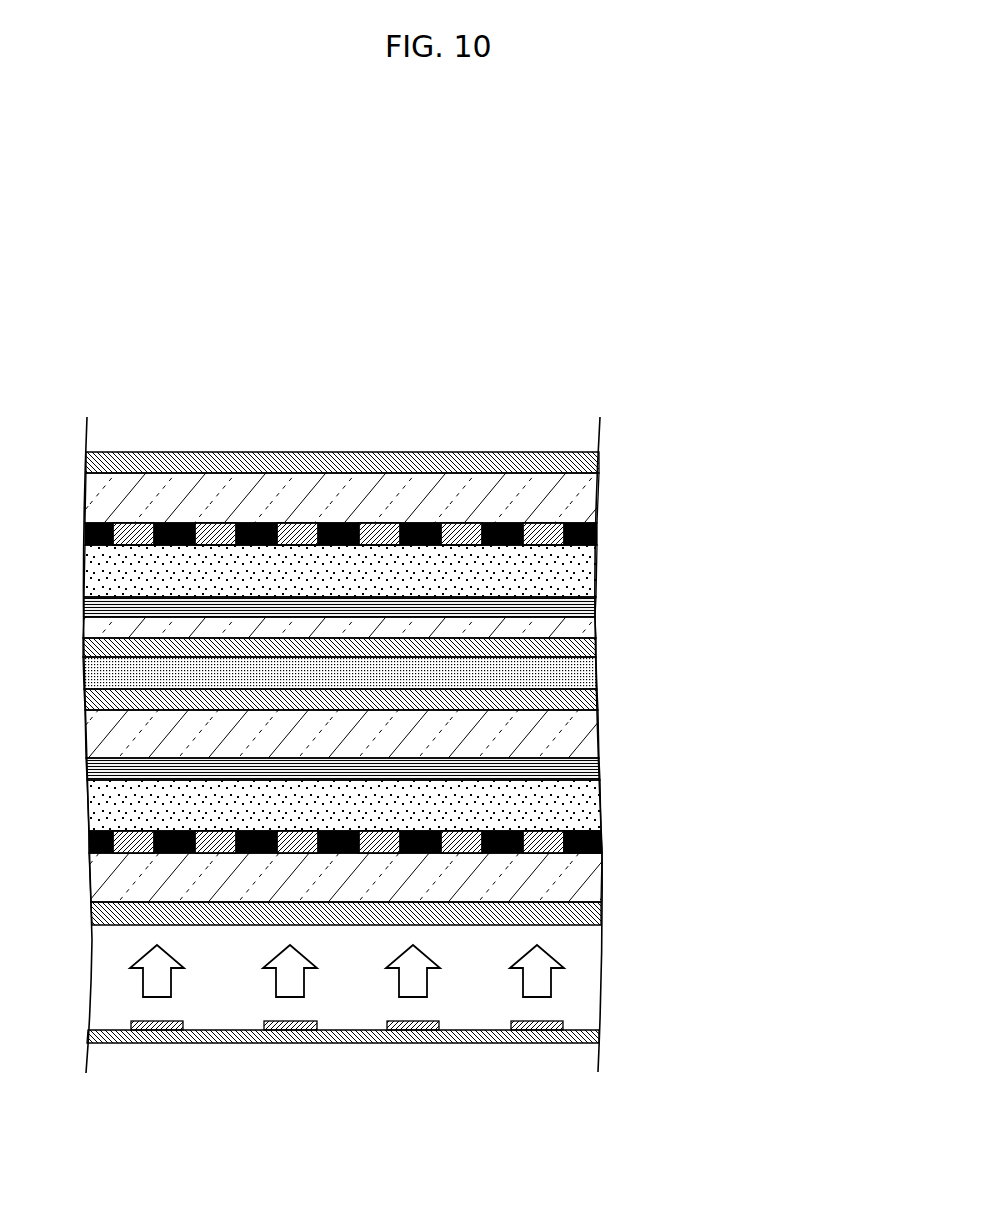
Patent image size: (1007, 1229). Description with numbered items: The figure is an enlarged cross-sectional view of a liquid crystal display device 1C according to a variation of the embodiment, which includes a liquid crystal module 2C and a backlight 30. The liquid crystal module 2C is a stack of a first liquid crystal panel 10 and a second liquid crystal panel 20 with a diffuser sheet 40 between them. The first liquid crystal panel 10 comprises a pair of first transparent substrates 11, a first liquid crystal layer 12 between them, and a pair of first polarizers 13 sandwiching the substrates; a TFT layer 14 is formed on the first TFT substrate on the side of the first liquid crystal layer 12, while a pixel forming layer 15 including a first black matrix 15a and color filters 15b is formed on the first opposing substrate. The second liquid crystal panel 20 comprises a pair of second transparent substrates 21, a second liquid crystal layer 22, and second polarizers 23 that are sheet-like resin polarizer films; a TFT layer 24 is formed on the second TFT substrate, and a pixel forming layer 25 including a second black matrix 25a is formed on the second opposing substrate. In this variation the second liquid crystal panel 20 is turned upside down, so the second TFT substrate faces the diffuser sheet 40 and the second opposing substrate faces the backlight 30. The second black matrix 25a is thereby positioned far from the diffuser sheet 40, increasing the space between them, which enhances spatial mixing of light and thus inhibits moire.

The liquid crystal display device 1C is at (670, 390).
The liquid crystal module 2C is at (790, 528).
The first liquid crystal panel 10 is at (727, 437).
The second liquid crystal panel 20 is at (727, 687).
The first transparent substrates 11 is at (588, 497).
The first liquid crystal layer 12 is at (598, 575).
The first polarizers 13 is at (600, 462).
The TFT layer 14 is at (597, 607).
The pixel forming layer 15 is at (676, 497).
The first black matrix 15a is at (573, 549).
The color filters 15b is at (554, 521).
The second transparent substrates 21 is at (592, 731).
The second liquid crystal layer 22 is at (598, 806).
The second polarizers 23 is at (598, 700).
The TFT layer 24 is at (598, 768).
The pixel forming layer 25 is at (600, 838).
The second black matrix 25a is at (581, 853).
The backlight 30 is at (574, 1021).
The diffuser sheet 40 is at (590, 676).